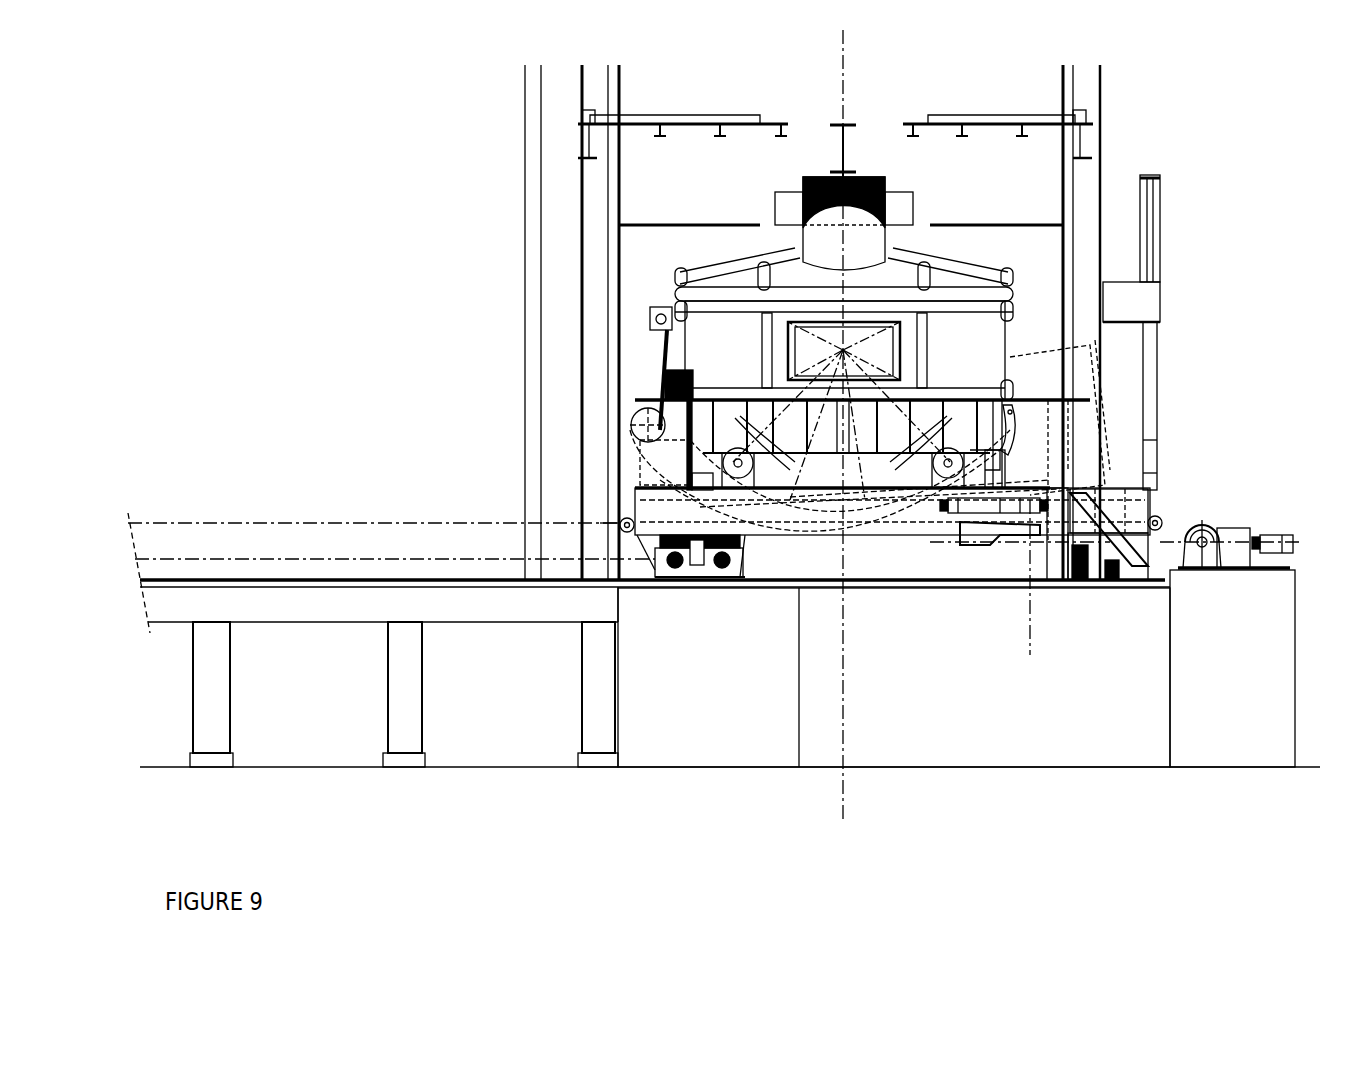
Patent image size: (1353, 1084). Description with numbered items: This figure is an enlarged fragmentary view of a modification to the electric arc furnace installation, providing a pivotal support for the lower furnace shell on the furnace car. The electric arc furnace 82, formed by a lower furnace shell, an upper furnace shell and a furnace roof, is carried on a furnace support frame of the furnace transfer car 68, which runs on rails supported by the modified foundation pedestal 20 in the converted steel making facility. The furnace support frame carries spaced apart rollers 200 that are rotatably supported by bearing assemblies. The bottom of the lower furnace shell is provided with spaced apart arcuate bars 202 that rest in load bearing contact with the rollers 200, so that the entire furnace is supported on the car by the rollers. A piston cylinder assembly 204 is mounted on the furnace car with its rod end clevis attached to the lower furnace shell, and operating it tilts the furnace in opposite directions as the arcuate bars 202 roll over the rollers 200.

The foundation pedestal 20 is at (931, 691).
The furnace transfer car 68 is at (1147, 500).
The electric arc furnace 82 is at (972, 262).
The rollers 200 is at (748, 470).
The arcuate bars 202 is at (896, 478).
The piston cylinder assembly 204 is at (757, 520).